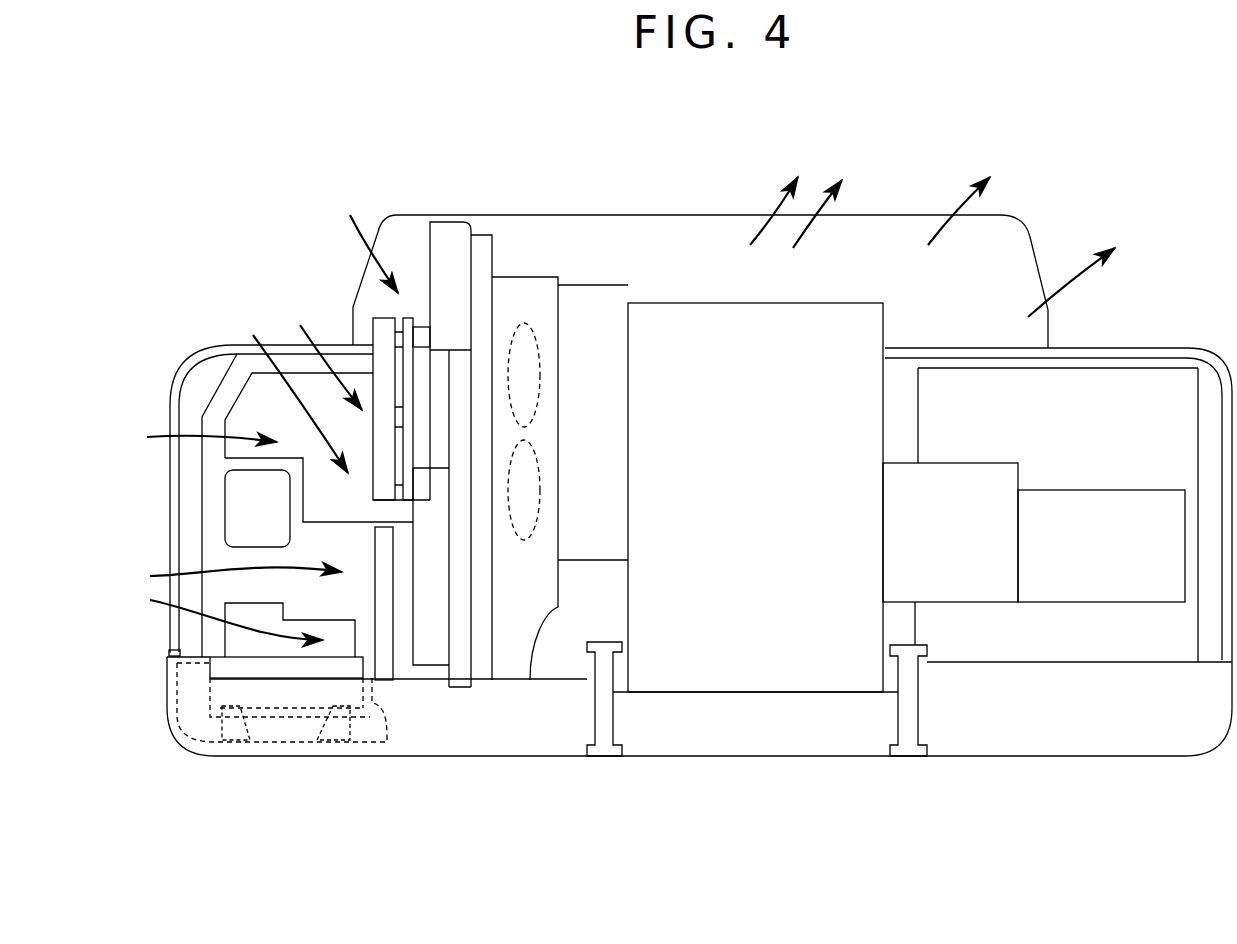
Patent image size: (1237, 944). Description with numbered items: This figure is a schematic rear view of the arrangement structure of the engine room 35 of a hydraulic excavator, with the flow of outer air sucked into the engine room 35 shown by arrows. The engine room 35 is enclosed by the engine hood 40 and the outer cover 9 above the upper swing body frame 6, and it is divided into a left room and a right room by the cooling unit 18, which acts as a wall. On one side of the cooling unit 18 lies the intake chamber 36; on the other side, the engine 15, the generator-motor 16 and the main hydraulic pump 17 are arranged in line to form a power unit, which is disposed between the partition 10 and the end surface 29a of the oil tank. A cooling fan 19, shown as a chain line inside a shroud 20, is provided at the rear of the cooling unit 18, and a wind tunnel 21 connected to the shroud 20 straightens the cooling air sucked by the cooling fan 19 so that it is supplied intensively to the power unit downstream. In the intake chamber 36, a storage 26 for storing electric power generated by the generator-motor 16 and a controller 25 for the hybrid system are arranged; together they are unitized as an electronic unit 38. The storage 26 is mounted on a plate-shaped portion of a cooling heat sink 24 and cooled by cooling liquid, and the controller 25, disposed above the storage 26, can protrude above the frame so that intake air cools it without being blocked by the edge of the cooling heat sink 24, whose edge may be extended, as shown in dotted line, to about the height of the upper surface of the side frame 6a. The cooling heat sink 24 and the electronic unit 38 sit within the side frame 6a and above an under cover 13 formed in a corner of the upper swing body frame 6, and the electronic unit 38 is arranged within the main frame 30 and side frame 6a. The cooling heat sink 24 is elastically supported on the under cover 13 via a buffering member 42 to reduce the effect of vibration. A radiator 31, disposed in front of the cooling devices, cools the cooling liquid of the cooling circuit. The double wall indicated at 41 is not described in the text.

The upper swing body frame 6 is at (1080, 745).
The side frame 6a is at (195, 708).
The outer cover 9 is at (184, 348).
The partition 10 is at (893, 363).
The under cover 13 is at (237, 750).
The engine 15 is at (742, 498).
The generator-motor 16 is at (932, 545).
The main hydraulic pump 17 is at (1087, 558).
The cooling unit 18 is at (482, 231).
The cooling fan 19 is at (524, 325).
The shroud 20 is at (507, 595).
The wind tunnel 21 is at (574, 423).
The cooling heat sink 24 is at (397, 730).
The controller 25 is at (226, 633).
The storage 26 is at (233, 667).
The end surface of the oil tank 29a is at (1097, 385).
The main frame 30 is at (602, 752).
The radiator 31 is at (388, 648).
The engine room 35 is at (843, 247).
The intake chamber 36 is at (320, 291).
The electronic unit 38 is at (122, 618).
The engine hood 40 is at (702, 217).
The double wall 41 is at (177, 477).
The buffering member 42 is at (303, 750).